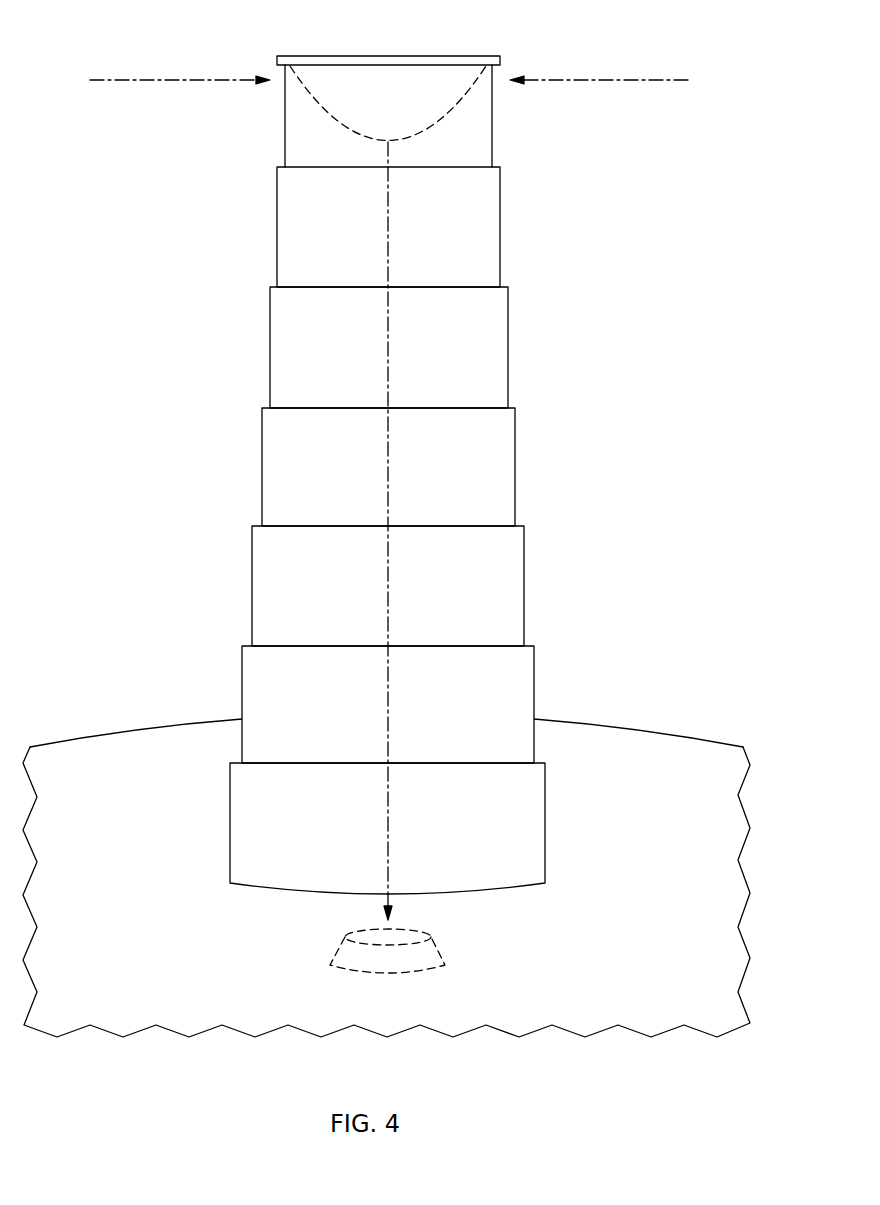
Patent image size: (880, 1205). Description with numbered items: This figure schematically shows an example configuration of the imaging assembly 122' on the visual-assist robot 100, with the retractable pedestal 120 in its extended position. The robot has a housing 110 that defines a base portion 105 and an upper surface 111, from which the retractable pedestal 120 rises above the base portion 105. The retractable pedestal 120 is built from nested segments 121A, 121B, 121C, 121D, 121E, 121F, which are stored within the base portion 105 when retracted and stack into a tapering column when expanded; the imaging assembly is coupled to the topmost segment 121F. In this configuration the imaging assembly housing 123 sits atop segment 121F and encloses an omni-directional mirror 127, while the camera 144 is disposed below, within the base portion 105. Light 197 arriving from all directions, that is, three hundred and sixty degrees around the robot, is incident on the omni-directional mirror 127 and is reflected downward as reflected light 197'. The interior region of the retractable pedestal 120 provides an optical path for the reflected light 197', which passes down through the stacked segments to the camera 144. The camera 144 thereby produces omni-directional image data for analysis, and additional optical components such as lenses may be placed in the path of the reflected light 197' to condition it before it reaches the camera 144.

The visual-assist robot 100 is at (138, 191).
The base portion 105 is at (647, 682).
The housing 110 is at (69, 735).
The upper surface 111 is at (140, 748).
The retractable pedestal 120 is at (606, 351).
The segment 121A is at (230, 815).
The segment 121B is at (242, 686).
The segment 121C is at (252, 580).
The segment 121D is at (262, 476).
The segment 121E is at (270, 340).
The segment 121F is at (277, 240).
The imaging assembly 122' is at (550, 117).
The imaging assembly housing 123 is at (297, 135).
The omni-directional mirror 127 is at (492, 105).
The camera 144 is at (312, 946).
The light 197 is at (412, 62).
The reflected light 197' is at (424, 531).